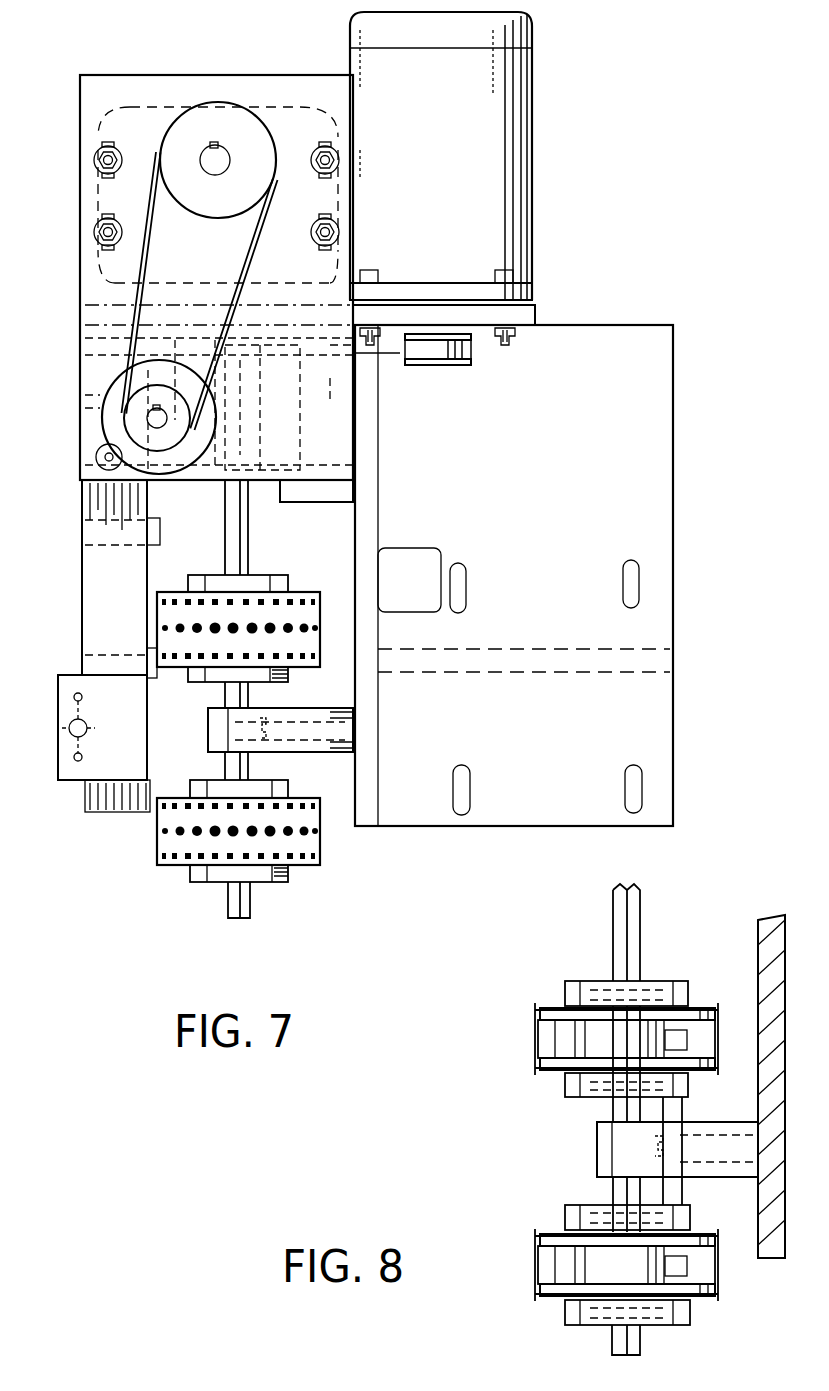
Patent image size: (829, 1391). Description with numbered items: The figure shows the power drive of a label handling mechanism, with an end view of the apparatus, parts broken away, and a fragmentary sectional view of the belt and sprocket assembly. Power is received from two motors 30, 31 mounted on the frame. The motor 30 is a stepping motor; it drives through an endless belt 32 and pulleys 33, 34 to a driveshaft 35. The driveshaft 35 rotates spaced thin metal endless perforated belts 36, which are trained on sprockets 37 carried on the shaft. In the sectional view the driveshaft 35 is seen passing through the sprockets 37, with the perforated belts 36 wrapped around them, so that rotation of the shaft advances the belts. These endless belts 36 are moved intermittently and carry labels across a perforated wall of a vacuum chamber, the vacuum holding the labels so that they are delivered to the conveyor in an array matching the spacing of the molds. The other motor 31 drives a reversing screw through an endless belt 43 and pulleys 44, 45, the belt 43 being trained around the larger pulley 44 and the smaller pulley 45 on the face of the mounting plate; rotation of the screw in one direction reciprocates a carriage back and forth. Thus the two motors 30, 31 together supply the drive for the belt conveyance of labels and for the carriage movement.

In FIG. 7, the motor 30 is at (532, 138).
In FIG. 7, the motor 31 is at (165, 103).
In FIG. 7, the endless belt 32 is at (400, 355).
In FIG. 7, the pulley 33 is at (446, 365).
In FIG. 7, the pulley 34 is at (289, 407).
In FIG. 7, the driveshaft 35 is at (250, 558).
In FIG. 8, the driveshaft 35 is at (641, 937).
In FIG. 7, the endless perforated belts 36 is at (178, 620).
In FIG. 8, the endless perforated belts 36 is at (535, 1052).
In FIG. 7, the sprocket 37 is at (304, 592).
In FIG. 8, the sprocket 37 is at (633, 1054).
In FIG. 7, the endless belt 43 is at (166, 225).
In FIG. 7, the pulley 44 is at (198, 118).
In FIG. 7, the pulley 45 is at (130, 413).